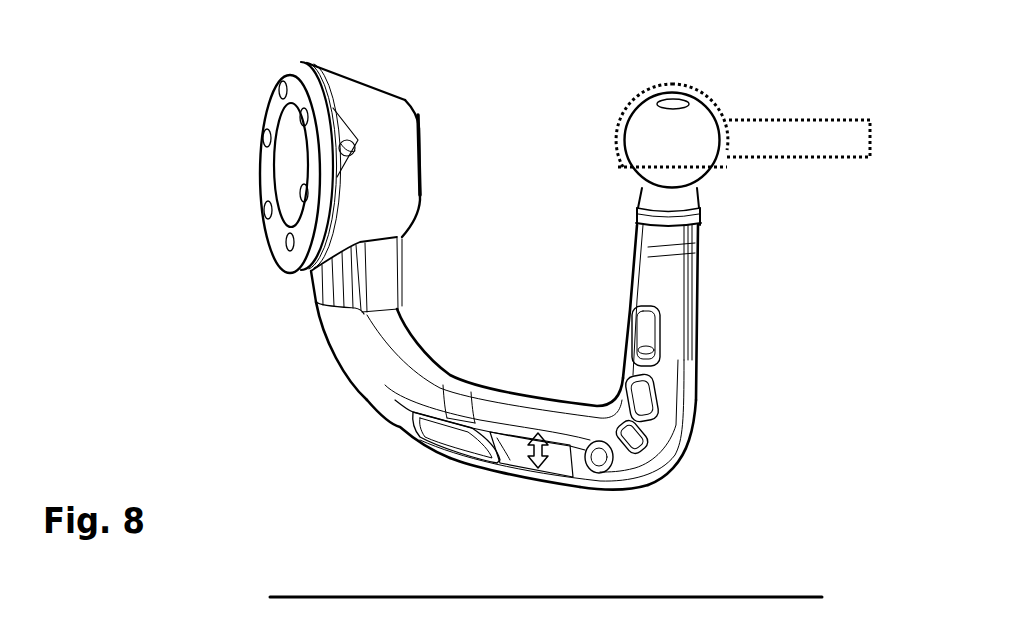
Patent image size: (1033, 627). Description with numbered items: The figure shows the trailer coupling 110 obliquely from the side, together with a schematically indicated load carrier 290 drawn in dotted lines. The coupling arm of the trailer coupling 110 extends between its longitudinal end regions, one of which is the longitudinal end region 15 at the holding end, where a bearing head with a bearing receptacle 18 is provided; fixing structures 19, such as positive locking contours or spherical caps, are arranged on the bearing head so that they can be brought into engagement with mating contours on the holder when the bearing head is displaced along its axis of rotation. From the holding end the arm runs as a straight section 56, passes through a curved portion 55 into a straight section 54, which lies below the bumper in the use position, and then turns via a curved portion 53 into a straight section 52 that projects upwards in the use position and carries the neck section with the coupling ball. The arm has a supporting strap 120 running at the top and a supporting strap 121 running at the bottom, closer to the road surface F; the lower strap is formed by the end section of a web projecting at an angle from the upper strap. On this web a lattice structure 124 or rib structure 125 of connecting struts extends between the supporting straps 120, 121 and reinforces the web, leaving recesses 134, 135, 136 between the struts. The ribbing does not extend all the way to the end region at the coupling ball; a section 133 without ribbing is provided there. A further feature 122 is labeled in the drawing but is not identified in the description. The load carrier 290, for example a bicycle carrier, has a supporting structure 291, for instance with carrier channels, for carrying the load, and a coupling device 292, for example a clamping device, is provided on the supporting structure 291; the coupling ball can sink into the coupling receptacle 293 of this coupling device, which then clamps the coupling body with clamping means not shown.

The bearing receptacle 18 is at (283, 168).
The fixing structures 19 is at (276, 231).
The longitudinal end region 15 is at (388, 263).
The straight section 56 is at (323, 283).
The recess 134 is at (333, 305).
The curved portion 55 is at (355, 400).
The supporting strap 120 is at (518, 388).
The recess 135 is at (470, 446).
The straight section 54 is at (457, 470).
The second recess with rib 122 is at (533, 462).
The recess 136 is at (553, 463).
The rib structure 125 is at (596, 471).
The supporting strap 121 is at (635, 483).
The curved portion 53 is at (672, 455).
The lattice structure 124 is at (650, 430).
The straight section 52 is at (693, 342).
The section without ribbing 133 is at (696, 235).
The trailer coupling 110 is at (690, 300).
The load carrier 290 is at (789, 121).
The supporting structure 291 is at (862, 120).
The coupling device 292 is at (702, 97).
The coupling receptacle 293 is at (633, 110).
The road surface F is at (305, 592).